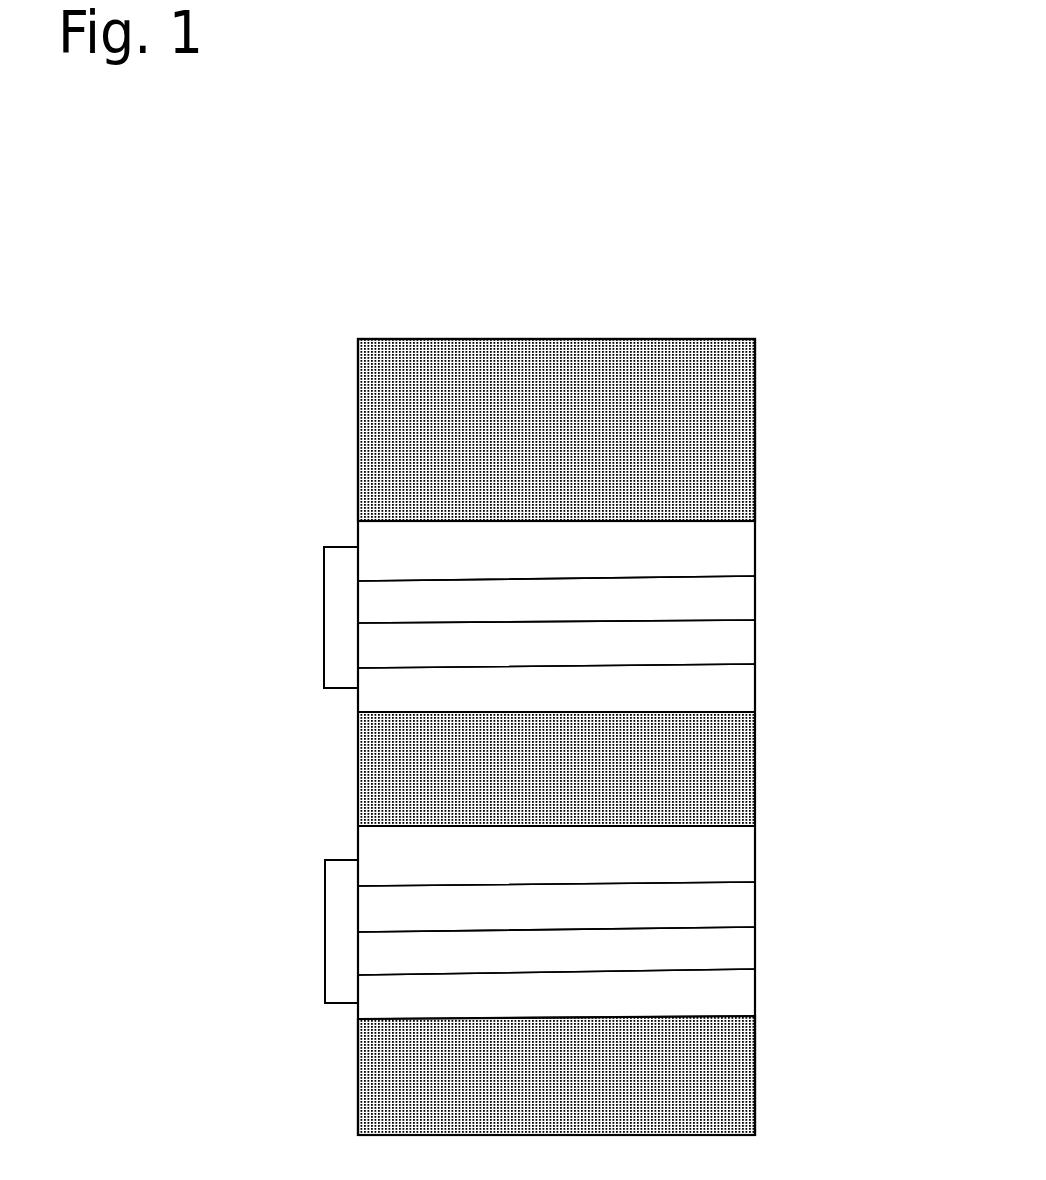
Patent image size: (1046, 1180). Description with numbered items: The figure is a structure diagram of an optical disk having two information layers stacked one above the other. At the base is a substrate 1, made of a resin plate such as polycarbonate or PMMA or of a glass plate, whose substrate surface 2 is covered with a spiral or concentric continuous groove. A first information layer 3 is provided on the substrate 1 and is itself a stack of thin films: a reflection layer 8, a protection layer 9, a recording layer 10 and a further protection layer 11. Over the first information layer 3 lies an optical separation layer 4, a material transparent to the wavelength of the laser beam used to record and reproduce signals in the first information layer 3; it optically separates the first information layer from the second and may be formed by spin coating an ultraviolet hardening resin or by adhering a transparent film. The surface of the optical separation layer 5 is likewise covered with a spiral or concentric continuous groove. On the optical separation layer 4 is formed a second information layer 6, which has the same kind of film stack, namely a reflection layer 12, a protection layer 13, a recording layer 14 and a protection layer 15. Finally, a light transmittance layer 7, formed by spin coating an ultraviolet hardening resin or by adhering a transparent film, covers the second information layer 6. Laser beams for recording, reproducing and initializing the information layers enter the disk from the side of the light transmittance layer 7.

The substrate 1 is at (717, 425).
The substrate surface 2 is at (405, 520).
The first information layer 3 is at (324, 618).
The optical separation layer 4 is at (398, 770).
The surface of the optical separation layer 5 is at (393, 826).
The second information layer 6 is at (325, 932).
The light transmittance layer 7 is at (722, 1075).
The reflection layer 8 is at (735, 544).
The protection layer 9 is at (740, 595).
The recording layer 10 is at (740, 638).
The protection layer 11 is at (742, 683).
The reflection layer 12 is at (716, 848).
The protection layer 13 is at (716, 901).
The recording layer 14 is at (716, 946).
The protection layer 15 is at (730, 997).